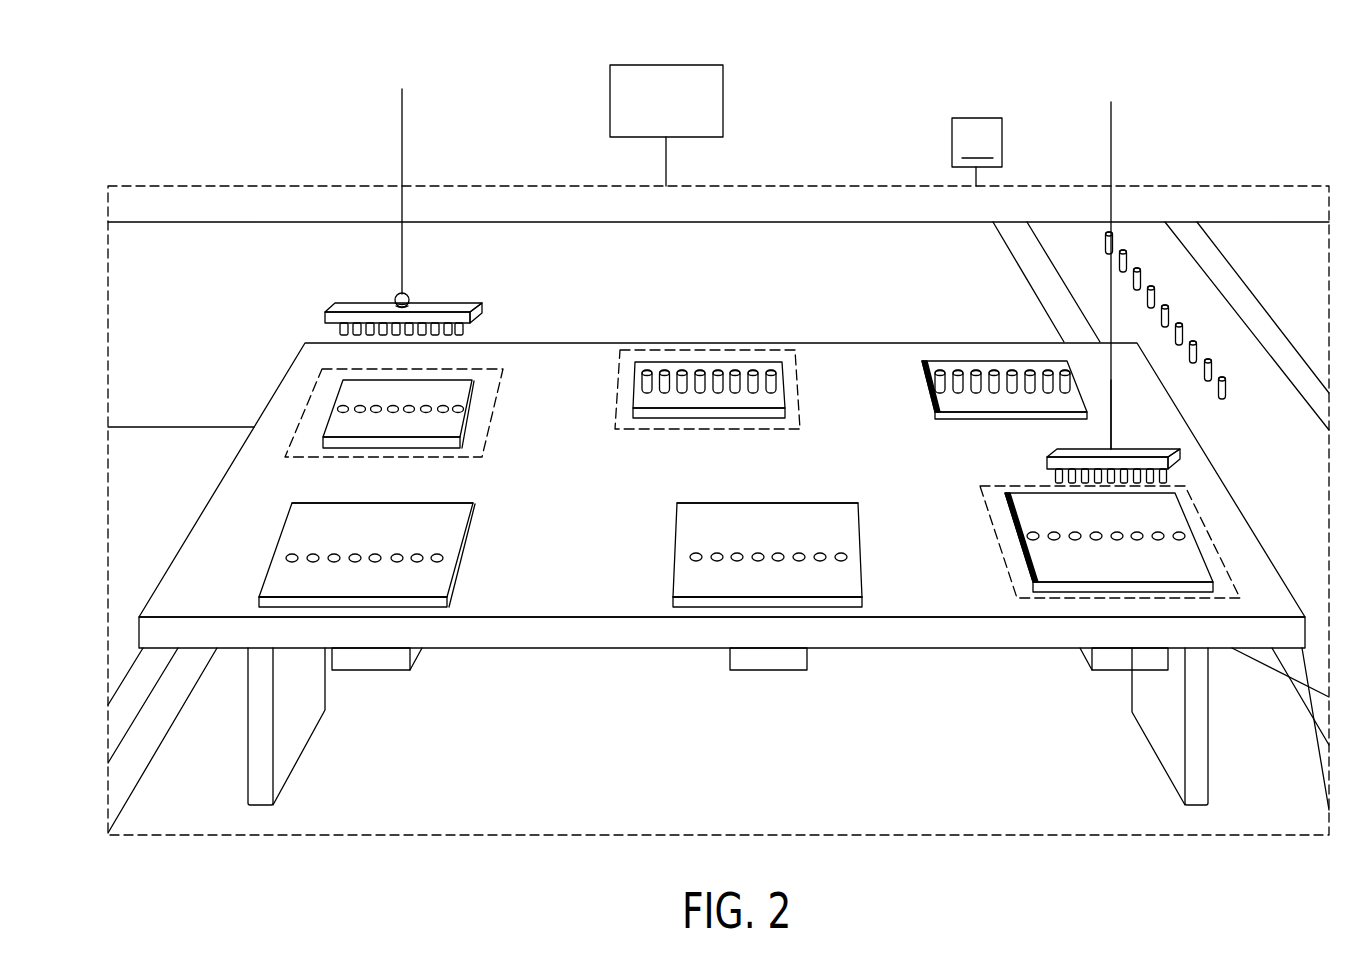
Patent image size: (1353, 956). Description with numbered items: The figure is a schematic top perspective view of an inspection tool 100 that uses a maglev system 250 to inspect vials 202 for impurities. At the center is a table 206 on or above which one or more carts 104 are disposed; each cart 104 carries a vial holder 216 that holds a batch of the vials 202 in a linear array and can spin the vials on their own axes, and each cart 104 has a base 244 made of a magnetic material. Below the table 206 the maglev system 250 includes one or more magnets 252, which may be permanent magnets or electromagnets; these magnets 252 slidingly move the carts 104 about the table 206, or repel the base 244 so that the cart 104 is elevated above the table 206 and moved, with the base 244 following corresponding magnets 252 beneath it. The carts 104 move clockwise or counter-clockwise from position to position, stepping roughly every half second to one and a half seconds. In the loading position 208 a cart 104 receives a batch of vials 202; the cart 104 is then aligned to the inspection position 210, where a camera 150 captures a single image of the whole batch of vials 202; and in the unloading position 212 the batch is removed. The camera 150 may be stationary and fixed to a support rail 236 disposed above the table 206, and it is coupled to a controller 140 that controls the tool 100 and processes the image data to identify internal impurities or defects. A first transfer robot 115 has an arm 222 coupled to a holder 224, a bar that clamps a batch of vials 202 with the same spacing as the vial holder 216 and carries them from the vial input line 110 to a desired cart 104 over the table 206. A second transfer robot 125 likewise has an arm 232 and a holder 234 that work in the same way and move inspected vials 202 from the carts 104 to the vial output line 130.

The inspection tool 100 is at (225, 127).
The cart 104 is at (921, 383).
The vial input line 110 is at (1250, 375).
The first transfer robot 115 is at (1110, 145).
The second transfer robot 125 is at (403, 137).
The vial output line 130 is at (195, 446).
The controller 140 is at (723, 100).
The camera 150 is at (977, 152).
The vials 202 is at (600, 383).
The table 206 is at (553, 600).
The loading position 208 is at (987, 510).
The inspection position 210 is at (797, 362).
The unloading position 212 is at (493, 407).
The vial holder 216 is at (380, 533).
The arm 222 is at (1113, 385).
The holder 224 is at (1180, 458).
The arm 232 is at (400, 260).
The holder 234 is at (445, 302).
The support rail 236 is at (876, 220).
The base 244 is at (428, 582).
The maglev system 250 is at (718, 588).
The magnets 252 is at (385, 670).